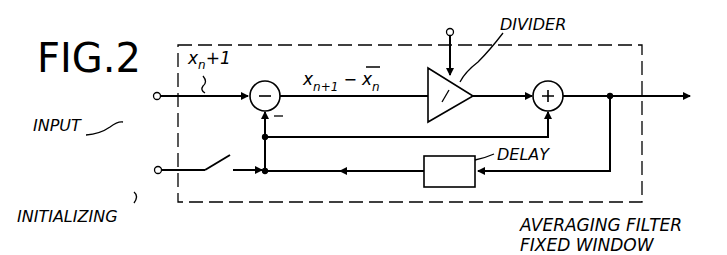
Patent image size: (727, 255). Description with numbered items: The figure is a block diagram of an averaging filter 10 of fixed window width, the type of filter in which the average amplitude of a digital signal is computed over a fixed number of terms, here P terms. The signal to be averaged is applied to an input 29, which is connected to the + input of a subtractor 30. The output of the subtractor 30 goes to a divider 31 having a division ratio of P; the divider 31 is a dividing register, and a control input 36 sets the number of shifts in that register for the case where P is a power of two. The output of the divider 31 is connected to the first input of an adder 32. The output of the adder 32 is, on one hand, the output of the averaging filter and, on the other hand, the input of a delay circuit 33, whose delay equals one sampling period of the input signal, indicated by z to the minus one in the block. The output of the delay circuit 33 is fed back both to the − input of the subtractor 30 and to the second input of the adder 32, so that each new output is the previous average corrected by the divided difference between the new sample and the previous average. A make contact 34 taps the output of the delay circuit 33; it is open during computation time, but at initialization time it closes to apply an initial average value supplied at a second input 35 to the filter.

The averaging filter 10 is at (350, 202).
The input 29 is at (154, 99).
The subtractor 30 is at (268, 72).
The divider 31 is at (428, 116).
The adder 32 is at (558, 75).
The delay circuit 33 is at (424, 181).
The make contact 34 is at (218, 161).
The input 35 is at (154, 172).
The control input 36 is at (460, 30).